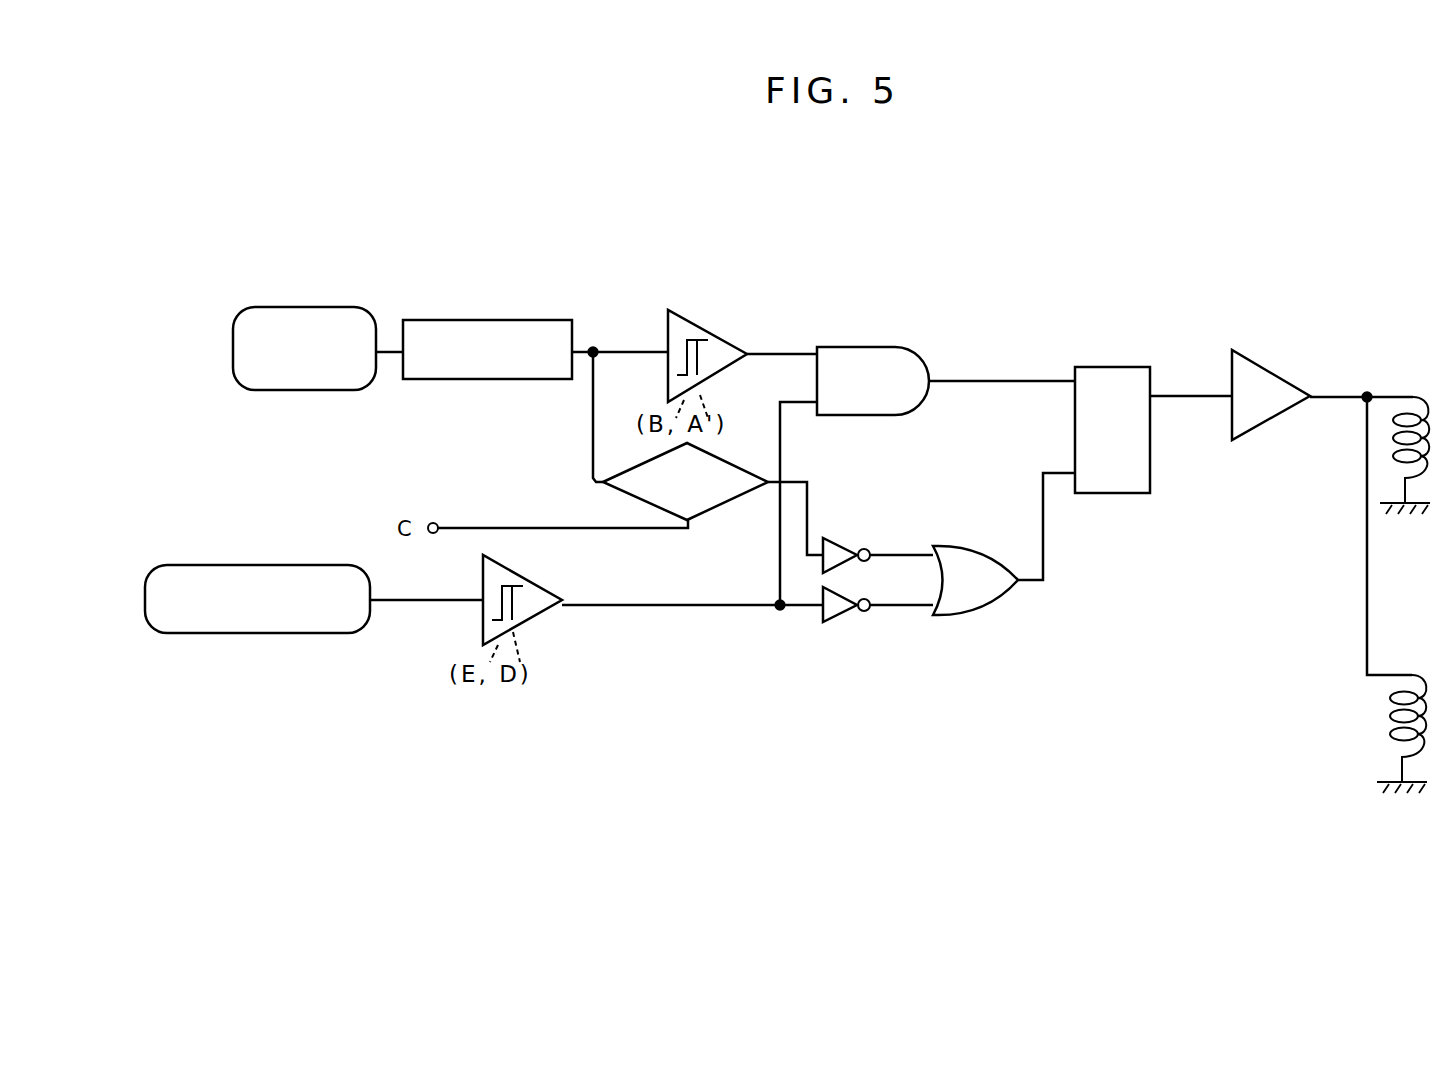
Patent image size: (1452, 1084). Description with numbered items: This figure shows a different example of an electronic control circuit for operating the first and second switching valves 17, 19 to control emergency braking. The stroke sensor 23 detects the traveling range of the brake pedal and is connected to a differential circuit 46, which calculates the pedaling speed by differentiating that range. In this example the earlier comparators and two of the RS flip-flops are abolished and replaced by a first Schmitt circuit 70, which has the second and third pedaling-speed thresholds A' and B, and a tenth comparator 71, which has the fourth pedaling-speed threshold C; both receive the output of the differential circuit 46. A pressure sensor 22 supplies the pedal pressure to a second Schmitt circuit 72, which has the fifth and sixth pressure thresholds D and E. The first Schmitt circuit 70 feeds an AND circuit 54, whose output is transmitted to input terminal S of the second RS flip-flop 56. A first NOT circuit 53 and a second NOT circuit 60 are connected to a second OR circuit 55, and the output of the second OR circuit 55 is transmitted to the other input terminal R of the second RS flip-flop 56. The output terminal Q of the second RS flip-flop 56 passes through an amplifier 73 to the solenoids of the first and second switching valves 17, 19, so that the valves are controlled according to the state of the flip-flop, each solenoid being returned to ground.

The stroke sensor 23 is at (302, 306).
The differential circuit 46 is at (498, 320).
The first Schmitt circuit 70 is at (698, 322).
The AND circuit 54 is at (882, 347).
The tenth comparator 71 is at (719, 507).
The pressure sensor 22 is at (290, 564).
The second Schmitt circuit 72 is at (542, 595).
The first NOT circuit 53 is at (838, 538).
The second NOT circuit 60 is at (835, 623).
The second OR circuit 55 is at (970, 613).
The second RS flip-flop 56 is at (1112, 365).
The amplifier 73 is at (1260, 365).
The first switching valve 17 is at (1405, 408).
The second switching valve 19 is at (1403, 684).